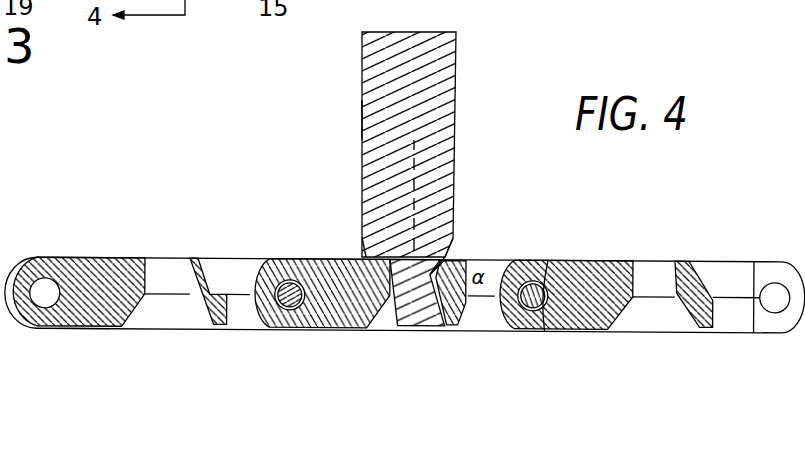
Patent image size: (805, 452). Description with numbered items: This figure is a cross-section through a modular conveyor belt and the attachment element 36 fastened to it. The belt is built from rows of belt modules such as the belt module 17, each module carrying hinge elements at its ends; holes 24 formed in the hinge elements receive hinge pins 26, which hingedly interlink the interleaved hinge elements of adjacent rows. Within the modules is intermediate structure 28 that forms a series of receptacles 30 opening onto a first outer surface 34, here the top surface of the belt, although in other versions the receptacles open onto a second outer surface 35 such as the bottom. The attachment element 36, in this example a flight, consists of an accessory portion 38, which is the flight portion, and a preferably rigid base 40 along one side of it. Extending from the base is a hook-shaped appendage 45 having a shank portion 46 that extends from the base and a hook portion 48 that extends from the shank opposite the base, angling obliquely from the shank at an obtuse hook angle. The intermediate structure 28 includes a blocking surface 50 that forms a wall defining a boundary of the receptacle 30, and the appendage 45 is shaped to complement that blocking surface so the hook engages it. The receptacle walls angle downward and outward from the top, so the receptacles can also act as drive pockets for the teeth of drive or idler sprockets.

The belt module 17 is at (498, 260).
The hole 24 is at (775, 282).
The hinge pin 26 is at (543, 268).
The intermediate structure 28 is at (378, 320).
The receptacle 30 is at (374, 318).
The first outer surface 34 is at (100, 257).
The second outer surface 35 is at (86, 330).
The attachment element 36 is at (457, 68).
The accessory portion 38 is at (372, 118).
The base 40 is at (362, 250).
The appendage 45 is at (437, 325).
The shank portion 46 is at (458, 248).
The hook portion 48 is at (404, 325).
The blocking surface 50 is at (470, 300).